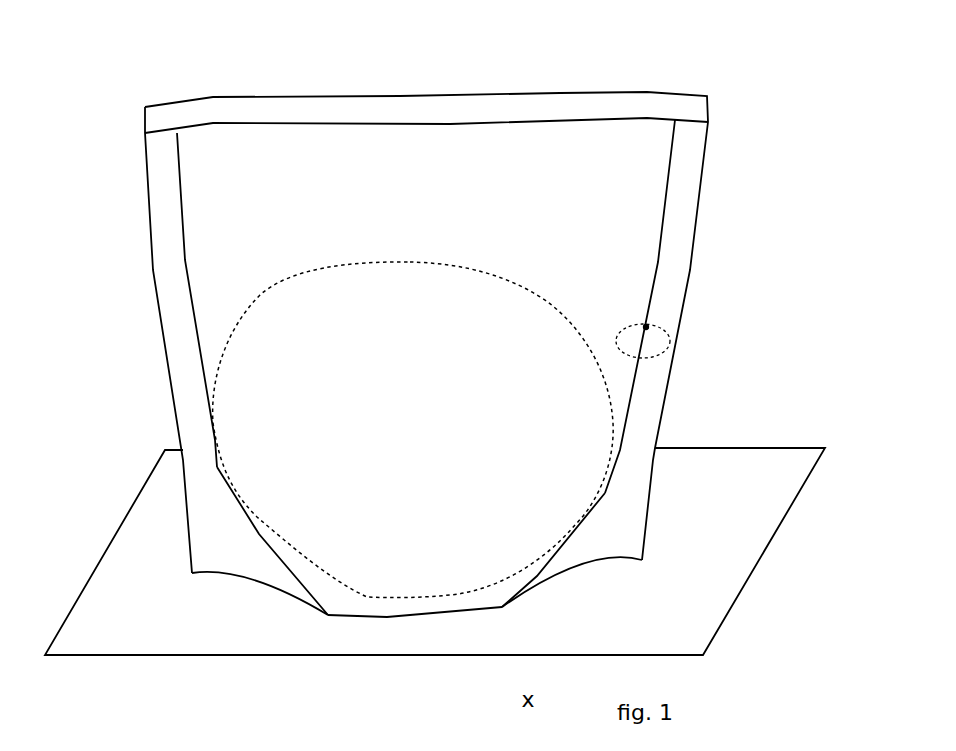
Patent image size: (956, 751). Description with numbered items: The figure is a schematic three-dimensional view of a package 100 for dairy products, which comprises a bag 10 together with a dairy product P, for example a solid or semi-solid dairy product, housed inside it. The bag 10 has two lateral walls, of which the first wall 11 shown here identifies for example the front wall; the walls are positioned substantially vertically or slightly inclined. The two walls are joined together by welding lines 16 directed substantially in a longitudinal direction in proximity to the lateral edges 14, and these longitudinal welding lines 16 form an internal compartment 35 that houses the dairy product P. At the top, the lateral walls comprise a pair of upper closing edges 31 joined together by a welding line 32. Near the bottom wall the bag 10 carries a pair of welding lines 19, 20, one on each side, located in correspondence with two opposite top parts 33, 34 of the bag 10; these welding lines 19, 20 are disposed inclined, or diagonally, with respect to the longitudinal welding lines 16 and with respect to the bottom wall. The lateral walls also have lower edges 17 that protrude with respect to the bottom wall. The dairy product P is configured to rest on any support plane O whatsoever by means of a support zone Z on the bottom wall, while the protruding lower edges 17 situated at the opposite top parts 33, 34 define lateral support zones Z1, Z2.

The package 100 is at (105, 85).
The bag 10 is at (598, 62).
The first wall 11 is at (630, 283).
The lateral edge 14 is at (188, 400).
The welding lines 16 is at (183, 230).
The lower edge 17 is at (388, 617).
The welding line 19 is at (259, 534).
The welding line 20 is at (537, 576).
The upper closing edges 31 is at (375, 117).
The welding line 32 is at (299, 123).
The top part 33 is at (265, 576).
The top part 34 is at (564, 571).
The internal compartment 35 is at (662, 353).
The dairy product P is at (410, 263).
The support plane O is at (775, 467).
The lateral support zone Z1 is at (176, 562).
The lateral support zone Z2 is at (650, 550).
The support zone Z is at (450, 596).